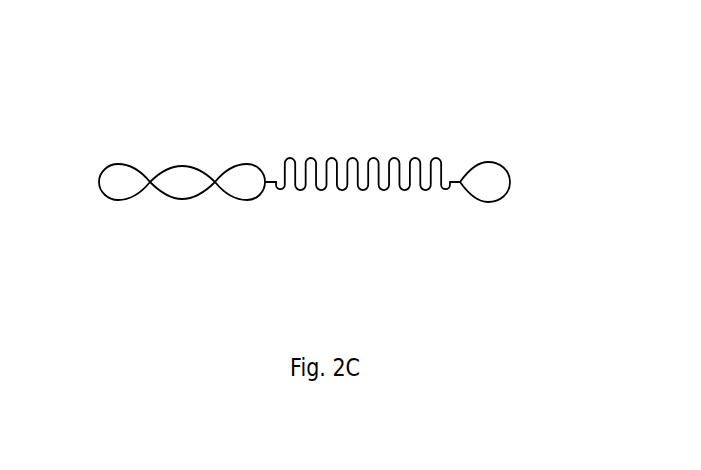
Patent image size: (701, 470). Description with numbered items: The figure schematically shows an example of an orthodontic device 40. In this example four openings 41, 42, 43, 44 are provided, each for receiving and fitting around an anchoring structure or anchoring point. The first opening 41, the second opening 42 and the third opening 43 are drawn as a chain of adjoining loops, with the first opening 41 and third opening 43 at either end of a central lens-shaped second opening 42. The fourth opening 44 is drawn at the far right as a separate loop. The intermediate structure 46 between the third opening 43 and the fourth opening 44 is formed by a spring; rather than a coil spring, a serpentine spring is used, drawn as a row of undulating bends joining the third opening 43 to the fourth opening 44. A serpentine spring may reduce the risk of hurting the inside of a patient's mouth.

The stent segment with serpentine coil 40 is at (349, 120).
The first opening 41 is at (108, 166).
The second opening 42 is at (175, 166).
The third opening 43 is at (234, 165).
The fourth opening 44 is at (493, 164).
The intermediate structure 46 is at (363, 190).